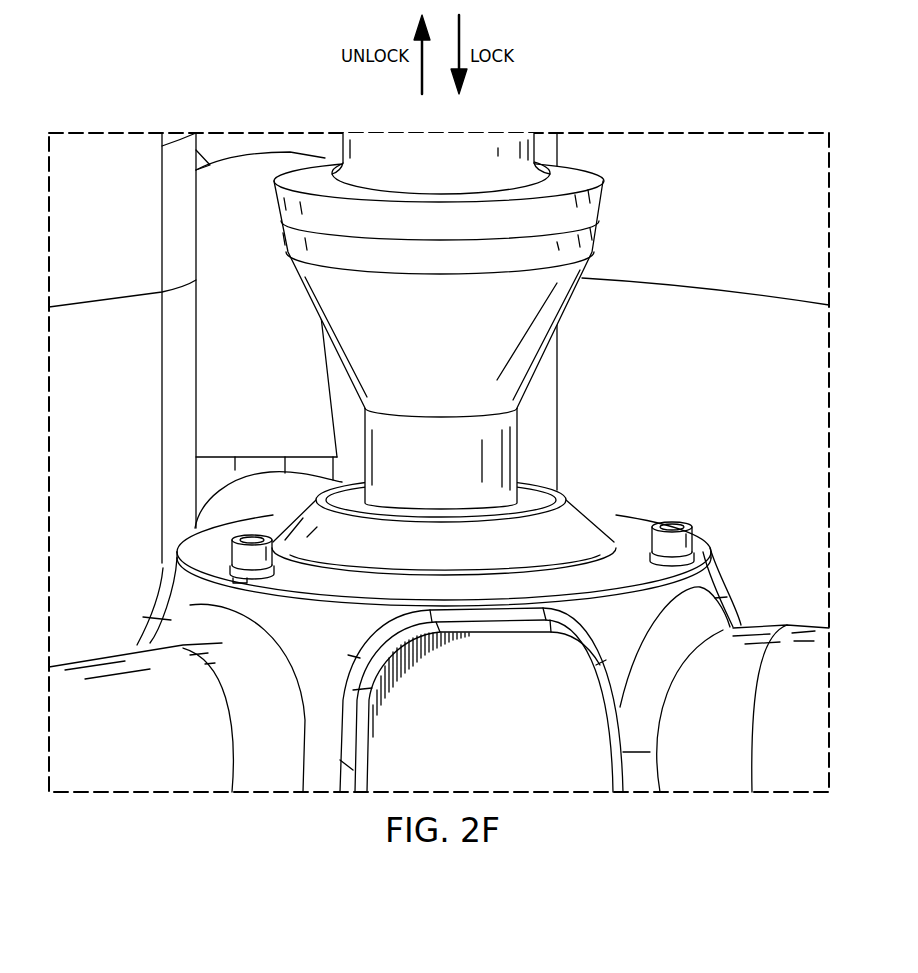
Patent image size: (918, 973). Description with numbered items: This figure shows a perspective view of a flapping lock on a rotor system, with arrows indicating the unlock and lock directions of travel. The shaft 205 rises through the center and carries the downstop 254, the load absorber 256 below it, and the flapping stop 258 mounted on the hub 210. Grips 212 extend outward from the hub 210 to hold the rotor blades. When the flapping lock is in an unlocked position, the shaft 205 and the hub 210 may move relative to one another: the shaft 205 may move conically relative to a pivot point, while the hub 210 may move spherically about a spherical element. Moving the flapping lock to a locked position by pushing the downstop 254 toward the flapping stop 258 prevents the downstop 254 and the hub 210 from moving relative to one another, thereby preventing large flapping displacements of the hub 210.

The shaft 205 is at (458, 479).
The hub 210 is at (510, 741).
The grip 212 is at (273, 467).
The downstop 254 is at (343, 150).
The load absorber 256 is at (578, 303).
The flapping stop 258 is at (618, 524).